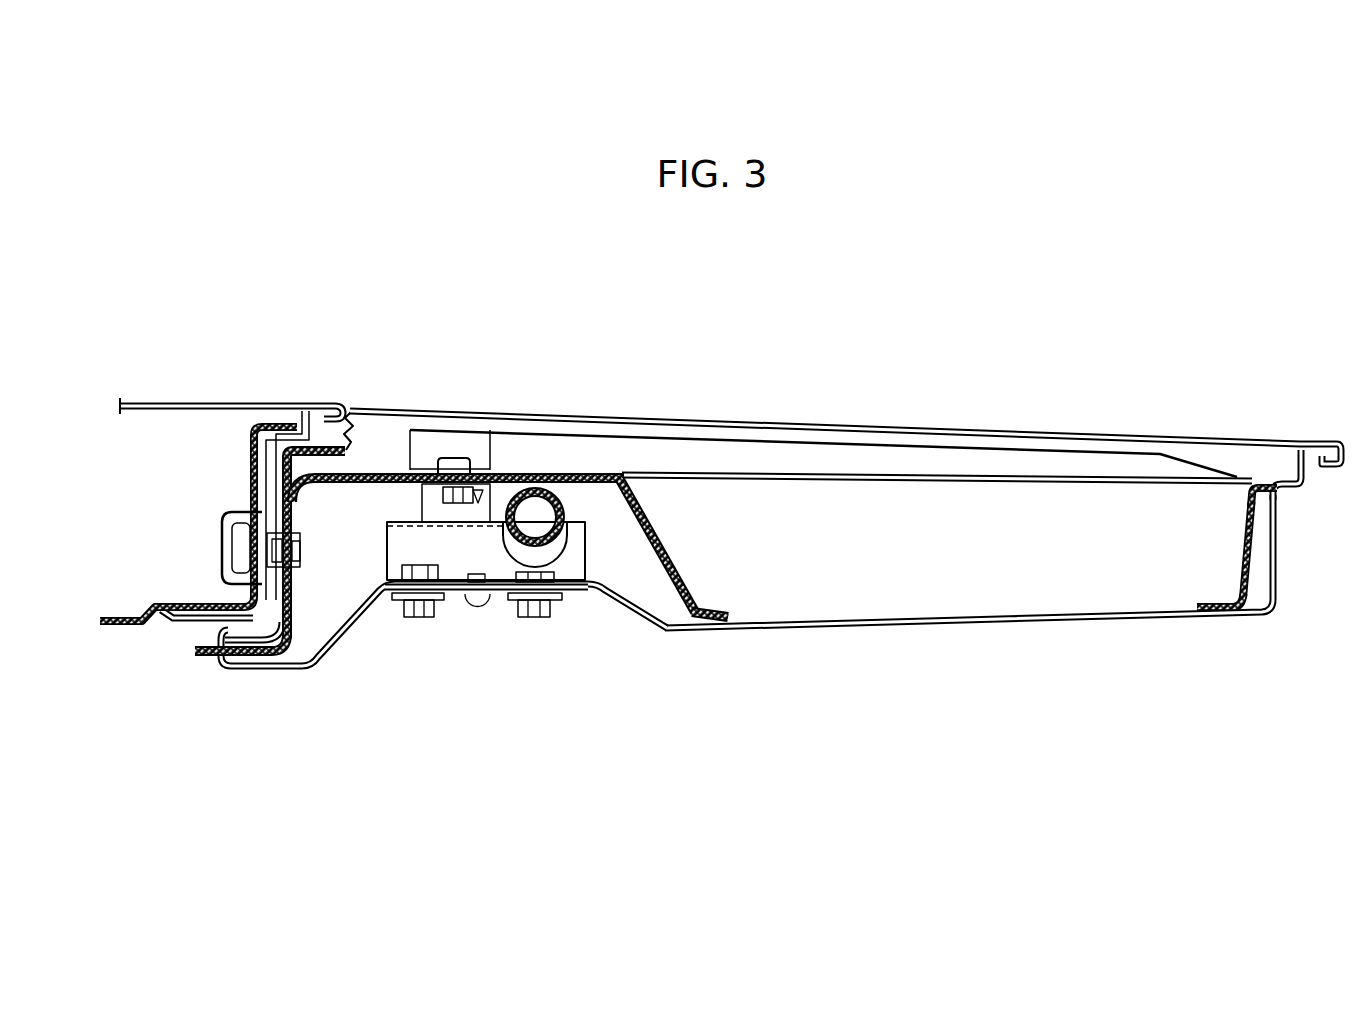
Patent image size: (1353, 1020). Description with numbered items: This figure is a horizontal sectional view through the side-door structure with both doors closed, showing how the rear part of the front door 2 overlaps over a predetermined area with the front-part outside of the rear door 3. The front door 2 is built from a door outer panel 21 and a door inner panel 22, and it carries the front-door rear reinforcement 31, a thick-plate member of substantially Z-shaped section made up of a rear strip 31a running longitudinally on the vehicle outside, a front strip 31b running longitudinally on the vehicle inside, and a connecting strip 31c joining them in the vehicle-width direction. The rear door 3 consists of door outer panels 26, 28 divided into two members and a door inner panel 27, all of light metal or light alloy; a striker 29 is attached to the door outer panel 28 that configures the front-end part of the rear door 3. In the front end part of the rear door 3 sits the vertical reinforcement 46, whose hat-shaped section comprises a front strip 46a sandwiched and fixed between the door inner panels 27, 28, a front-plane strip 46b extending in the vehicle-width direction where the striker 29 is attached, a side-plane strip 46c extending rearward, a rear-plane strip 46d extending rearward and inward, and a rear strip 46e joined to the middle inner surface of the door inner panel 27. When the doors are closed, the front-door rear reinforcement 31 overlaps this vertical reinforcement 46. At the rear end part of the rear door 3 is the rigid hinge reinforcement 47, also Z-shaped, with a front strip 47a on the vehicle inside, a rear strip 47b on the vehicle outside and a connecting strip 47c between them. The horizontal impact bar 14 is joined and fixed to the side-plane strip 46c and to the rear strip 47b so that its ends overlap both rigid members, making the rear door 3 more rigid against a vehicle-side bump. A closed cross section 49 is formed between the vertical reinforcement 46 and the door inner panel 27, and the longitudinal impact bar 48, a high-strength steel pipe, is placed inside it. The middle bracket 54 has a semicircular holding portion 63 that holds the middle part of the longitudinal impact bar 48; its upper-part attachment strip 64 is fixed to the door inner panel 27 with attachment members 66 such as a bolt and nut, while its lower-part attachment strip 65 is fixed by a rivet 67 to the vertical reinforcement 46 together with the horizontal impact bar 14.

The front door 2 is at (206, 398).
The rear door 3 is at (845, 510).
The horizontal impact bar 14 is at (880, 480).
The door outer panel 21 is at (148, 401).
The door inner panel 22 is at (178, 627).
The door outer panel 26 is at (643, 418).
The door inner panel 27 is at (875, 632).
The door outer panel 28 is at (280, 478).
The striker 29 is at (222, 556).
The front-door rear reinforcement 31 is at (187, 493).
The rear strip 31a is at (263, 425).
The front strip 31b is at (118, 614).
The connecting strip 31c is at (248, 447).
The vertical reinforcement 46 is at (498, 531).
The front strip 46a is at (243, 667).
The front-plane strip 46b is at (301, 572).
The side-plane strip 46c is at (372, 482).
The rear-plane strip 46d is at (690, 590).
The rear strip 46e is at (712, 613).
The hinge reinforcement 47 is at (1206, 547).
The front strip 47a is at (1218, 603).
The rear strip 47b is at (1275, 478).
The connecting strip 47c is at (1249, 507).
The longitudinal impact bar 48 is at (571, 477).
The closed cross section 49 is at (640, 580).
The middle bracket 54 is at (381, 546).
The holding portion 63 is at (572, 546).
The upper-part attachment strip 64 is at (449, 583).
The lower-part attachment strip 65 is at (487, 497).
The attachment members 66 is at (421, 618).
The rivet 67 is at (456, 460).